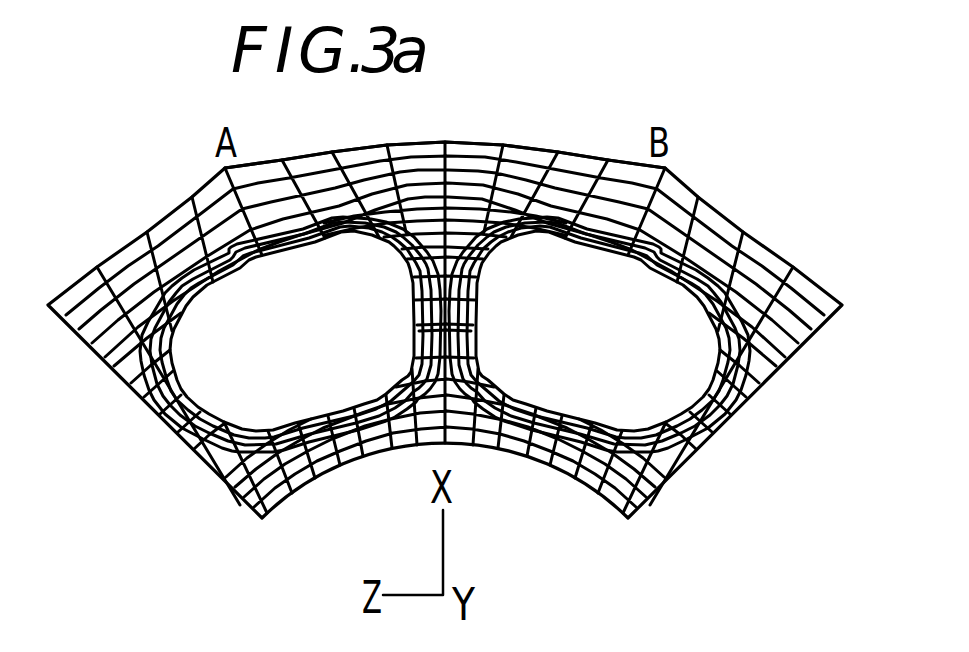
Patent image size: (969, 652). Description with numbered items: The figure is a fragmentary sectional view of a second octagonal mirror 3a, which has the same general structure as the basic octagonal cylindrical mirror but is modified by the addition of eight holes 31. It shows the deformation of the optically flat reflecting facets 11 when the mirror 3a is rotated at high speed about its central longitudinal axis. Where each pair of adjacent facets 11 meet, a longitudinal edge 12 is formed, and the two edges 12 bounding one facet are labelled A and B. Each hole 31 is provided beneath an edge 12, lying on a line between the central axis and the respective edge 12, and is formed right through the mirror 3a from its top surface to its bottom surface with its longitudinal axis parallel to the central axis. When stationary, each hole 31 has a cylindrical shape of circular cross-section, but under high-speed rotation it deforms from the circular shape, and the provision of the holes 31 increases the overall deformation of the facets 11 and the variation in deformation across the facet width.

The optically flat reflecting facet 11 is at (457, 142).
The longitudinal edge 12 is at (667, 168).
The hole 31 is at (632, 390).
The octagonal mirror 3a is at (790, 378).